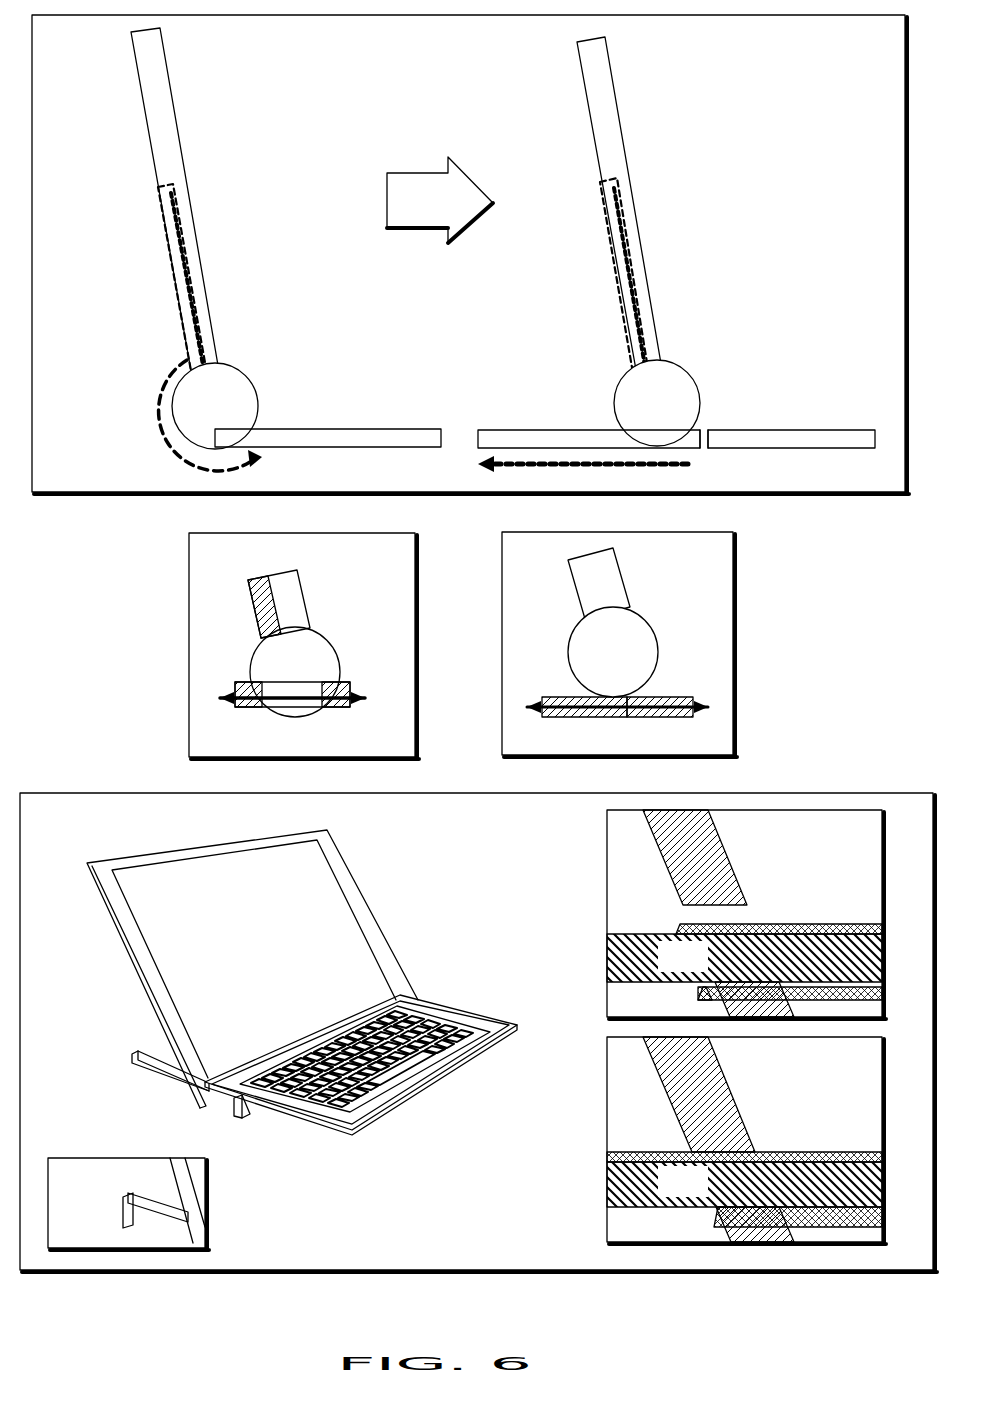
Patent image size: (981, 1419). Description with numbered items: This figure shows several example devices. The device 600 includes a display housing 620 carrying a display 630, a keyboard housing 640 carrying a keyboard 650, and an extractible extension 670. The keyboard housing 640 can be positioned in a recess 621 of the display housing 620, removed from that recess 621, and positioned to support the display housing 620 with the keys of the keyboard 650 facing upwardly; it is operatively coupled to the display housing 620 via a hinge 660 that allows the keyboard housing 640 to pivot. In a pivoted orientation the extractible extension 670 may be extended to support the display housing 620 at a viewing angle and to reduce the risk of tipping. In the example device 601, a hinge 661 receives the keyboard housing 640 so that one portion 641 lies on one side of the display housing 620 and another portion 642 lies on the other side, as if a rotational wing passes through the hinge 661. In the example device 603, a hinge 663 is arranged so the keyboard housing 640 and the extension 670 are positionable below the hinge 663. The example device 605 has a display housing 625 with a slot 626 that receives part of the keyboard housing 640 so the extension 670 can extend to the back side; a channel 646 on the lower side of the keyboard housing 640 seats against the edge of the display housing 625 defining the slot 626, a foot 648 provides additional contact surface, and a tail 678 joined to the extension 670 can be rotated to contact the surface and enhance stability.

The device 600 is at (116, 64).
The device 601 is at (327, 561).
The device 603 is at (635, 574).
The device 605 is at (442, 856).
The display housing 620 is at (165, 112).
The recess 621 is at (173, 240).
The display housing 625 is at (378, 943).
The slot 626 is at (750, 902).
The display 630 is at (313, 868).
The keyboard housing 640 is at (340, 438).
The portion 641 is at (340, 707).
The portion 642 is at (257, 707).
The channel 646 is at (706, 992).
The foot 648 is at (235, 1113).
The keyboard 650 is at (452, 1008).
The hinge 660 is at (230, 392).
The hinge 661 is at (303, 665).
The hinge 663 is at (623, 640).
The extractible extension 670 is at (560, 437).
The tail 678 is at (125, 1217).